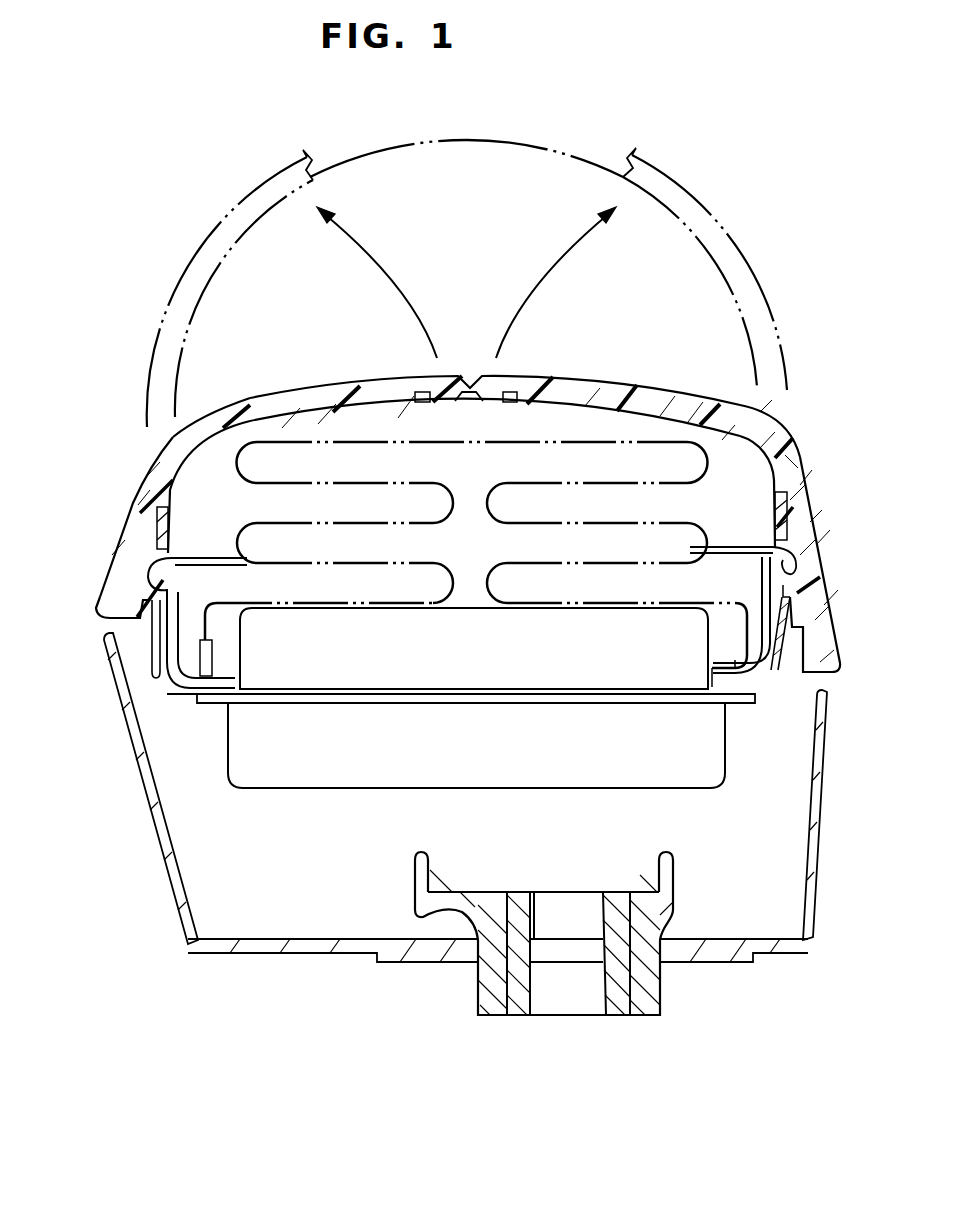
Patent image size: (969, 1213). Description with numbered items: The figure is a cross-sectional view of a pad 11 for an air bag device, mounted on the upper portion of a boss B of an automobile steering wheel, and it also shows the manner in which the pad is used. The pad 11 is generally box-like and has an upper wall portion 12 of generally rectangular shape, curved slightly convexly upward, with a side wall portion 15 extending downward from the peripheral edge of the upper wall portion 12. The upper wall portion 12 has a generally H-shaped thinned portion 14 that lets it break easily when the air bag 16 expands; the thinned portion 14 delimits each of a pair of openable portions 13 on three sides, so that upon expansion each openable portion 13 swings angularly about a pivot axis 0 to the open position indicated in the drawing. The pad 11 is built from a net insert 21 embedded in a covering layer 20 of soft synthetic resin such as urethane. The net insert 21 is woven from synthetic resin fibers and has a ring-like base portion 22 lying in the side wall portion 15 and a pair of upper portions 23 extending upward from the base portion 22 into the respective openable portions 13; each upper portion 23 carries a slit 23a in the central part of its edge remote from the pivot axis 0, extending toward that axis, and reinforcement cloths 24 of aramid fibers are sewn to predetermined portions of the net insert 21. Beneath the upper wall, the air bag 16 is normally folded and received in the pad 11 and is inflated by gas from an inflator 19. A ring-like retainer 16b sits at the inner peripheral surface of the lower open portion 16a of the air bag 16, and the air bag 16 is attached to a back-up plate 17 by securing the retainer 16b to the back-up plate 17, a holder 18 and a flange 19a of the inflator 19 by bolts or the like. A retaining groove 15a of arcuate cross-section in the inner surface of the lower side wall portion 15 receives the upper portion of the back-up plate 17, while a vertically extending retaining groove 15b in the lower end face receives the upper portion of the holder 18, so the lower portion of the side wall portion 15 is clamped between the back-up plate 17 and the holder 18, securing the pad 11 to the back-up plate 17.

The pad 11 is at (830, 497).
The upper wall portion 12 is at (600, 370).
The openable portions 13 is at (197, 262).
The thinned portion 14 is at (470, 375).
The side wall portion 15 is at (112, 585).
The retaining groove 15a is at (205, 557).
The retaining groove 15b is at (157, 673).
The air bag 16 is at (447, 443).
The lower open portion 16a is at (236, 667).
The retainer 16b is at (206, 652).
The back-up plate 17 is at (180, 598).
The holder 18 is at (170, 694).
The inflator 19 is at (505, 789).
The flange 19a is at (347, 697).
The covering layer 20 is at (722, 418).
The net insert 21 is at (767, 404).
The base portion 22 is at (790, 593).
The upper portions 23 is at (380, 385).
The slit 23a is at (318, 393).
The reinforcement cloths 24 is at (158, 504).
The pivot axis 0 is at (153, 446).
The boss B is at (625, 1035).